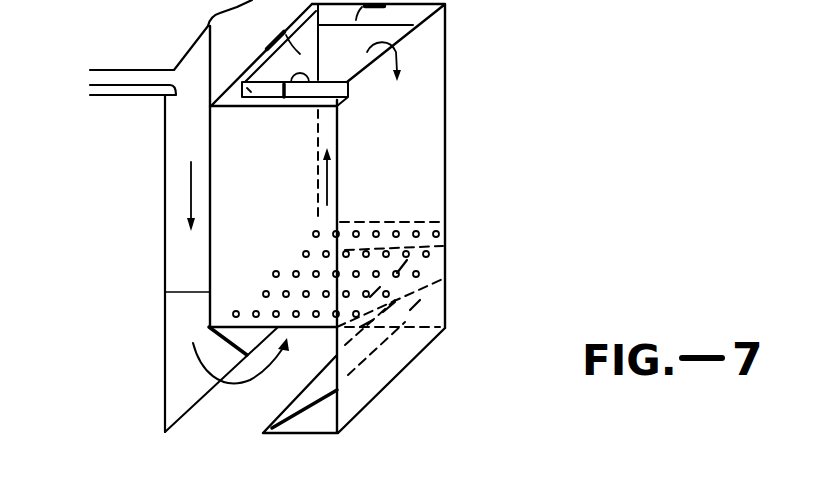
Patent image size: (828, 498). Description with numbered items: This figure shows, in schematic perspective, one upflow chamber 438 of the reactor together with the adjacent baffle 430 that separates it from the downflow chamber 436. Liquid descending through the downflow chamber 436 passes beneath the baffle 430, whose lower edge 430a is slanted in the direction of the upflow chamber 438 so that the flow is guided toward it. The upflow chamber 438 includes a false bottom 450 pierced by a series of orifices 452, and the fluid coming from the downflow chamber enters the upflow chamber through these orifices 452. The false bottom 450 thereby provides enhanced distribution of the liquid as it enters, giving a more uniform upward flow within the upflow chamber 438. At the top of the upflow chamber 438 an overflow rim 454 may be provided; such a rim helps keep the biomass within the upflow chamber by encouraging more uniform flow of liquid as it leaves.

The baffle 430 is at (208, 143).
The lower edge of baffle 430a is at (226, 342).
The downflow chamber 436 is at (188, 283).
The upflow chamber 438 is at (272, 225).
The false bottom 450 is at (447, 249).
The orifices 452 is at (345, 225).
The overflow rim 454 is at (348, 84).